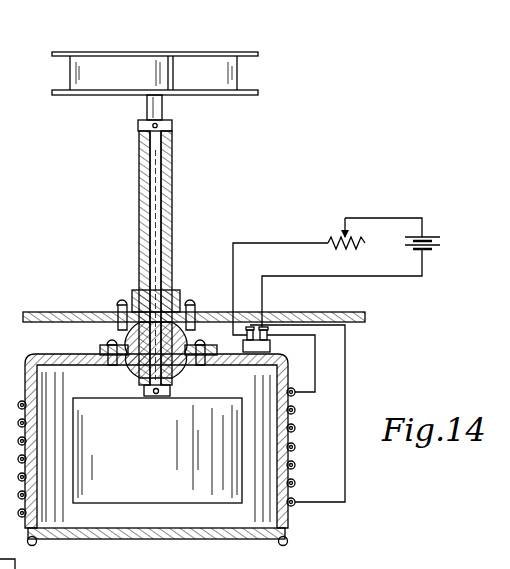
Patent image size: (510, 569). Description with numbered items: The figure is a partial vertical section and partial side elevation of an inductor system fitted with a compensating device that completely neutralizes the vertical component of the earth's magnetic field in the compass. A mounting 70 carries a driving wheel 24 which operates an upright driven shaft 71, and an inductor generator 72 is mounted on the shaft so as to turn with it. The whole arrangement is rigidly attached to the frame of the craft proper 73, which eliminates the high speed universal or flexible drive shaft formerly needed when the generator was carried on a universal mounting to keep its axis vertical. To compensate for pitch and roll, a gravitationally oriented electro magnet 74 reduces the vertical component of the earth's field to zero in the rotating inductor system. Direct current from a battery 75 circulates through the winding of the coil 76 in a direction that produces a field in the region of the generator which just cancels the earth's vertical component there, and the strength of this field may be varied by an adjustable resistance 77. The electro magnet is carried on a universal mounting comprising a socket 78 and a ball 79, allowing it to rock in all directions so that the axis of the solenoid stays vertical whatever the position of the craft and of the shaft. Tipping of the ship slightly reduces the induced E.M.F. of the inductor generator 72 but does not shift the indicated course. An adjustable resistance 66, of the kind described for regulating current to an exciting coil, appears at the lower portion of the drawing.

The driving wheel 24 is at (210, 52).
The mounting 70 is at (172, 192).
The upright driven shaft 71 is at (157, 160).
The frame of the craft 73 is at (66, 311).
The socket 78 is at (188, 342).
The ball 79 is at (174, 374).
The gravitationally oriented electro magnet 74 is at (295, 455).
The coil 76 is at (295, 431).
The inductor generator 72 is at (157, 450).
The adjustable resistance 77 is at (342, 233).
The battery 75 is at (441, 247).
The adjustable resistance 66 is at (18, 561).